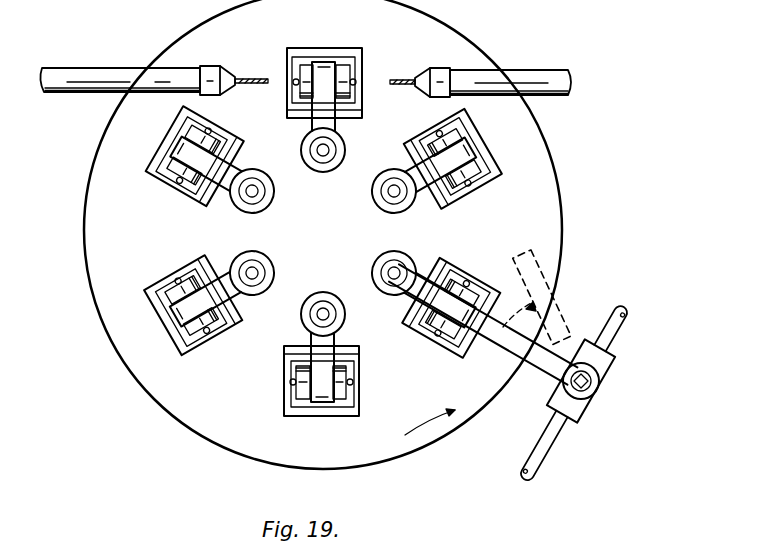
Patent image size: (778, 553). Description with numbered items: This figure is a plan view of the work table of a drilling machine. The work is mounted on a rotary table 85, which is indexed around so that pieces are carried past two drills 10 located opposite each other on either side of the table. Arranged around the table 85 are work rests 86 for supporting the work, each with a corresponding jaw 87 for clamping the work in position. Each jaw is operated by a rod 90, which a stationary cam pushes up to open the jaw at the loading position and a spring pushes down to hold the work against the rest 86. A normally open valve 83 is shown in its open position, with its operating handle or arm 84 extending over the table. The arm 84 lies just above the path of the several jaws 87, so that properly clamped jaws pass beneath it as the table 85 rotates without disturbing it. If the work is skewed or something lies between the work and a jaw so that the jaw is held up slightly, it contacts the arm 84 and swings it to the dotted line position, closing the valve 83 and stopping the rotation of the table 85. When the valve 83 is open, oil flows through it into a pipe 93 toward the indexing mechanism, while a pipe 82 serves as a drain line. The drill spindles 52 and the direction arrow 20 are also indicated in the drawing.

The drill 10 is at (248, 76).
The direction of rotation arrow 20 is at (478, 473).
The drill spindle 52 is at (74, 76).
The pipe 82 is at (545, 447).
The normally open valve 83 is at (600, 365).
The operating handle 84 is at (533, 254).
The rotary table 85 is at (542, 165).
The work rest 86 is at (304, 55).
The jaw 87 is at (328, 70).
The rod 90 is at (325, 150).
The pipe 93 is at (613, 325).